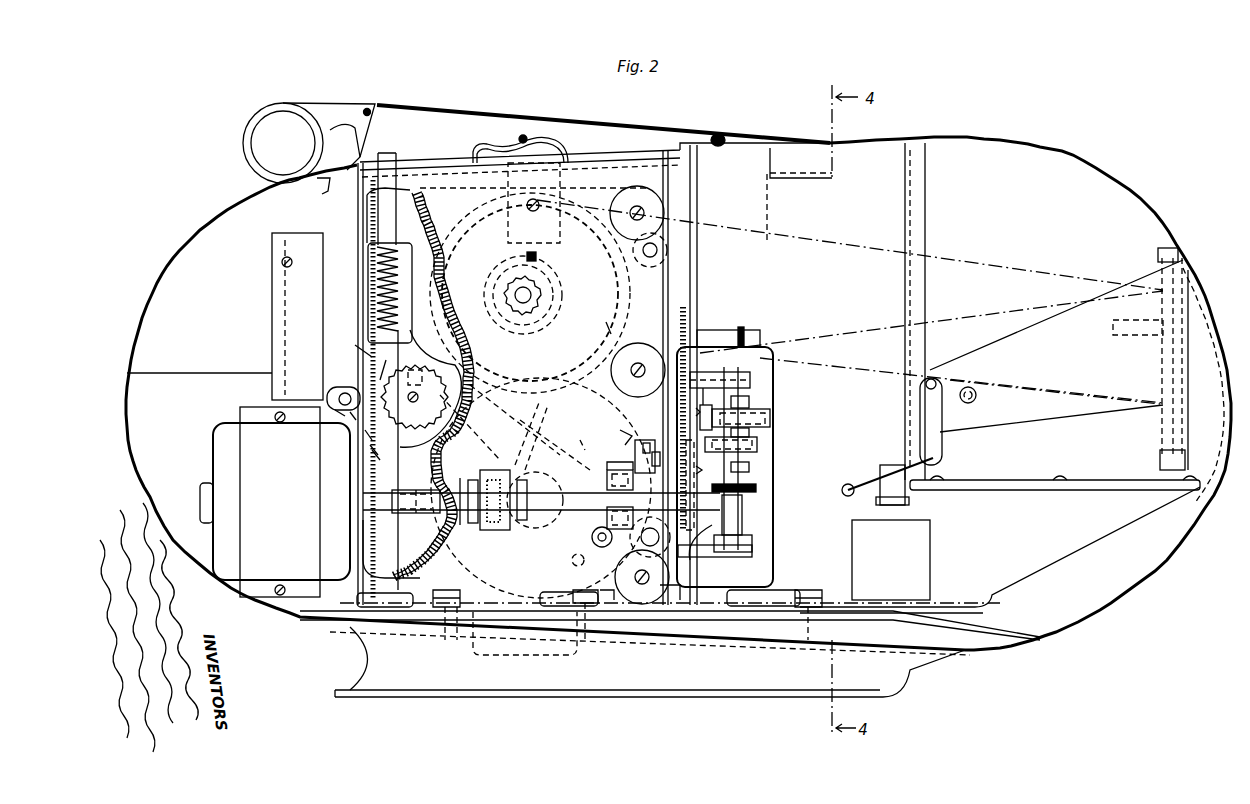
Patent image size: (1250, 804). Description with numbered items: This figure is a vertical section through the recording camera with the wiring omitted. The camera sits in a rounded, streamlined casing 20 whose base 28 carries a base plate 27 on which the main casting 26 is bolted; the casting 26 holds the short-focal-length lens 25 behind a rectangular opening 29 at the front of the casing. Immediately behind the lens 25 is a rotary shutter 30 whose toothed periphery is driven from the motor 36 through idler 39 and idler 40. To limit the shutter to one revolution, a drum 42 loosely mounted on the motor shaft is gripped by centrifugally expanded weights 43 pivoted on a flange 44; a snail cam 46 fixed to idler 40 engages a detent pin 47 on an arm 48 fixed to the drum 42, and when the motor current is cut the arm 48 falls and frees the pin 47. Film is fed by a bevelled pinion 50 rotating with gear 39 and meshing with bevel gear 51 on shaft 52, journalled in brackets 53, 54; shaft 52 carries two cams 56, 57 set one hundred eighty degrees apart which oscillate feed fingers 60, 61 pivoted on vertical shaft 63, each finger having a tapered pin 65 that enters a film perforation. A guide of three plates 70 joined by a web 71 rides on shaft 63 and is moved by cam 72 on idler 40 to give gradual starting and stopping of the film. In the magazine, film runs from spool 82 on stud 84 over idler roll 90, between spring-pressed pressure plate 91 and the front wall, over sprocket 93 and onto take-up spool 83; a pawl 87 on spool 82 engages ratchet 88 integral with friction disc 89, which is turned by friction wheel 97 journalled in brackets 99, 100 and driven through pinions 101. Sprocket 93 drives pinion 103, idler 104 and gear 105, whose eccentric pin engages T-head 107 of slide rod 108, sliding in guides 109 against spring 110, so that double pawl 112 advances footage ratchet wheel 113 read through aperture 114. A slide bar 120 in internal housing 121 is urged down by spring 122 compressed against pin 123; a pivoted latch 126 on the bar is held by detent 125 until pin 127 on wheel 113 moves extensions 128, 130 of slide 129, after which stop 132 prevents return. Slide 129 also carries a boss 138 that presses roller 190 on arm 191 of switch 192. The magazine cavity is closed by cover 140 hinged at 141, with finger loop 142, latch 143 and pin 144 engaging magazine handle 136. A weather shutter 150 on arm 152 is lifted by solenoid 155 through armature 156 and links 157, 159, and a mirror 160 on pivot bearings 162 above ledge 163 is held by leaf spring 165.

The casing 20 is at (1080, 153).
The camera lens 25 is at (735, 333).
The casting 26 is at (694, 289).
The base plate 27 is at (946, 607).
The base 28 is at (883, 700).
The rectangular opening 29 is at (1218, 350).
The rotary shutter 30 is at (690, 326).
The motor 36 is at (275, 501).
The idler 39 is at (686, 520).
The idler 40 is at (682, 395).
The drum 42 is at (617, 466).
The centrifugally expanded weights 43 is at (607, 479).
The flange 44 is at (591, 541).
The snail cam 46 is at (640, 440).
The detent pin 47 is at (625, 440).
The arm 48 is at (654, 464).
The bevelled pinion 50 is at (741, 500).
The bevel gear 51 is at (758, 490).
The shaft 52 is at (743, 520).
The bracket 53 is at (754, 546).
The bracket 54 is at (750, 378).
The cam 56 is at (752, 452).
The cam 57 is at (772, 420).
The feed finger 60 is at (759, 444).
The feed finger 61 is at (772, 416).
The vertical shaft 63 is at (717, 540).
The tapered pin 65 is at (702, 444).
The plates 70 is at (751, 401).
The web 71 is at (699, 395).
The cam 72 is at (698, 426).
The film spool 82 is at (611, 328).
The film spool 83 is at (452, 568).
The stud 84 is at (506, 302).
The spring-pressed pawl 87 is at (537, 257).
The ratchet 88 is at (562, 294).
The friction disc 89 is at (551, 320).
The idler roll 90 is at (652, 258).
The pressure plate 91 is at (662, 268).
The sprocket 93 is at (641, 590).
The friction driving wheel 97 is at (497, 532).
The bracket 99 is at (486, 470).
The bracket 100 is at (522, 530).
The pinions 101 is at (487, 532).
The pinion 103 is at (670, 590).
The idler 104 is at (608, 600).
The gear 105 is at (574, 565).
The T-head 107 is at (597, 452).
The slide rod 108 is at (551, 429).
The guides 109 is at (500, 390).
The spring 110 is at (505, 441).
The double pawl 112 is at (414, 397).
The footage indicating ratchet wheel 113 is at (426, 385).
The aperture 114 is at (470, 366).
The slide bar 120 is at (390, 158).
The internal housing 121 is at (425, 276).
The spring 122 is at (376, 262).
The pin 123 is at (388, 362).
The detent 125 is at (372, 453).
The pivoted latch 126 is at (372, 454).
The pin 127 is at (352, 416).
The extension 128 is at (327, 393).
The slide 129 is at (368, 354).
The extension 130 is at (366, 440).
The stop 132 is at (400, 495).
The magazine handle 136 is at (497, 143).
The boss 138 is at (337, 412).
The cover 140 is at (490, 112).
The hinge 141 is at (716, 135).
The finger loop 142 is at (245, 142).
The latch 143 is at (325, 196).
The pin 144 is at (527, 137).
The parti-cylindrical sheet metal member 150 is at (1190, 268).
The arm 152 is at (1046, 425).
The solenoid 155 is at (915, 545).
The armature 156 is at (890, 508).
The link 157 is at (862, 480).
The link 159 is at (946, 440).
The mirror 160 is at (1160, 370).
The pivot bearings 162 is at (1158, 252).
The ledge 163 is at (1098, 493).
The leaf spring 165 is at (1145, 329).
The roller 190 is at (286, 417).
The switch operating arm 191 is at (363, 384).
The switch 192 is at (282, 312).